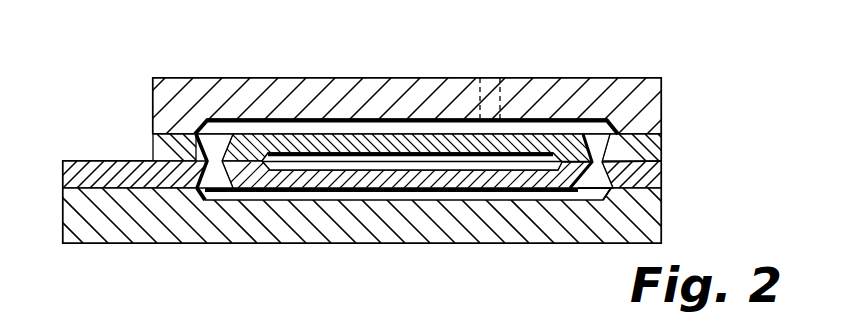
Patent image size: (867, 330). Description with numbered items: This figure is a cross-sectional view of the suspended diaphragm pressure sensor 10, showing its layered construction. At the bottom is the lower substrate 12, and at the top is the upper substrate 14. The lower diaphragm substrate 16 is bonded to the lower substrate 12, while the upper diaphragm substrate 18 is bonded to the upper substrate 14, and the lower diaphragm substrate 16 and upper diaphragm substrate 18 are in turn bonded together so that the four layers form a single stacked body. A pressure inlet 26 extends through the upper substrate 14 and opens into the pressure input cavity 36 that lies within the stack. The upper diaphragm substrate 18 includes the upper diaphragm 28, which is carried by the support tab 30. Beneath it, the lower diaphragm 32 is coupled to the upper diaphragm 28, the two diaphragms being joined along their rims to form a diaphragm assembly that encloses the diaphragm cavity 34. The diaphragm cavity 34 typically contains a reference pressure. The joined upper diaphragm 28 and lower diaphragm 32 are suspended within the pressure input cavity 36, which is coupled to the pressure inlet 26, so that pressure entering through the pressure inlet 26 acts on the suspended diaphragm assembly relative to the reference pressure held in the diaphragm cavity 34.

The suspended diaphragm pressure sensor 10 is at (674, 43).
The lower substrate 12 is at (663, 212).
The upper substrate 14 is at (663, 100).
The lower diaphragm substrate 16 is at (663, 176).
The upper diaphragm substrate 18 is at (663, 143).
The pressure inlet 26 is at (491, 78).
The upper diaphragm 28 is at (290, 150).
The support tab 30 is at (216, 143).
The lower diaphragm 32 is at (312, 178).
The diaphragm cavity 34 is at (464, 172).
The pressure input cavity 36 is at (372, 122).